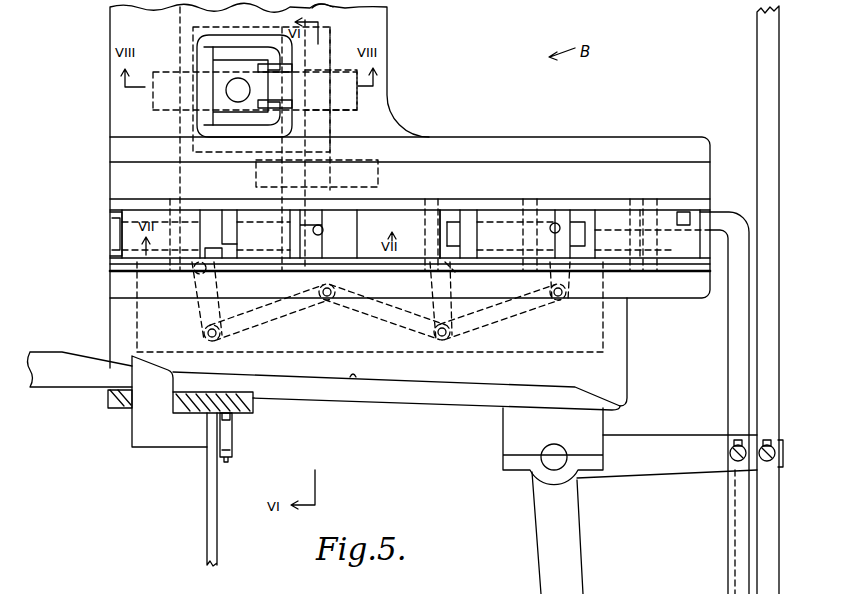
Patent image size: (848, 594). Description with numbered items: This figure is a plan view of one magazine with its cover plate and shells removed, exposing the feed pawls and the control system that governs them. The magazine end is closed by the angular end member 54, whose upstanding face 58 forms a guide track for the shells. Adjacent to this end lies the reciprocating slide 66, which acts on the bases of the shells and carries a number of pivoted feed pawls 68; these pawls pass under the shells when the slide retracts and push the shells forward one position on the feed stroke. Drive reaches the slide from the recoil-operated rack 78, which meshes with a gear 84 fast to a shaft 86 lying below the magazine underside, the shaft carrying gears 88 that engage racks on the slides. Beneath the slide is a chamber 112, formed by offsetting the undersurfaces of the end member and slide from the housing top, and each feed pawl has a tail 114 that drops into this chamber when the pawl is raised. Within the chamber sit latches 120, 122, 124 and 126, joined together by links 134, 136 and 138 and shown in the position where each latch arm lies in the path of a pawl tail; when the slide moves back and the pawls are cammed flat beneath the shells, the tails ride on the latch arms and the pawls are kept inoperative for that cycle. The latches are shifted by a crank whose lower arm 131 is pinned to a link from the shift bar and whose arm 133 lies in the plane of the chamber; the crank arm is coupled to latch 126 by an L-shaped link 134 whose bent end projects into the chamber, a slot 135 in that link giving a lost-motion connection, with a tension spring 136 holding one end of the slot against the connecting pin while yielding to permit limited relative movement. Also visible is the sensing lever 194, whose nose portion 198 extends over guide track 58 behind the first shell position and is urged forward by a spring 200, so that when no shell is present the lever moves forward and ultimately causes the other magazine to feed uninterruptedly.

The end member 54 is at (627, 323).
The upstanding face 58 is at (353, 378).
The reciprocating slide 66 is at (704, 204).
The feed pawl 68 is at (121, 232).
The rack 78 is at (268, 60).
The gear 84 is at (360, 101).
The shaft 86 is at (318, 10).
The gear 88 is at (378, 176).
The chamber 112 is at (415, 350).
The tail 114 is at (327, 212).
The latch 120 is at (228, 273).
The latch 122 is at (445, 222).
The latch 124 is at (457, 274).
The latch 126 is at (632, 230).
The lower arm 131 is at (578, 533).
The crank arm 133 is at (688, 442).
The link 134 is at (775, 262).
The slot 135 is at (768, 440).
The tension spring 136 is at (404, 329).
The link 138 is at (505, 326).
The sensing lever 194 is at (212, 526).
The nose portion 198 is at (165, 391).
The spring 200 is at (232, 445).